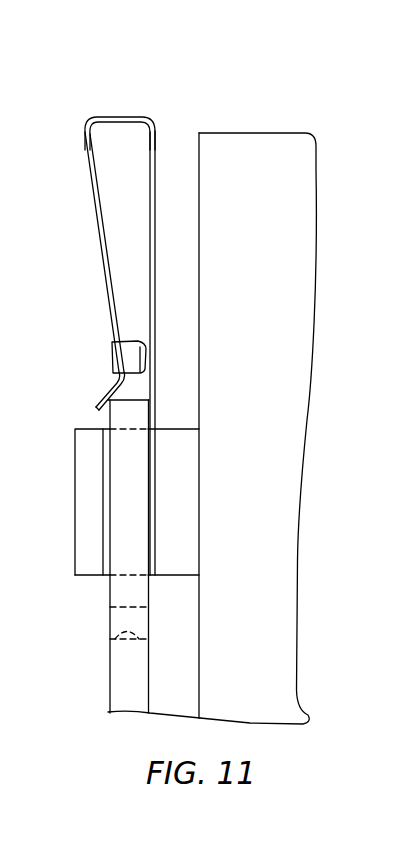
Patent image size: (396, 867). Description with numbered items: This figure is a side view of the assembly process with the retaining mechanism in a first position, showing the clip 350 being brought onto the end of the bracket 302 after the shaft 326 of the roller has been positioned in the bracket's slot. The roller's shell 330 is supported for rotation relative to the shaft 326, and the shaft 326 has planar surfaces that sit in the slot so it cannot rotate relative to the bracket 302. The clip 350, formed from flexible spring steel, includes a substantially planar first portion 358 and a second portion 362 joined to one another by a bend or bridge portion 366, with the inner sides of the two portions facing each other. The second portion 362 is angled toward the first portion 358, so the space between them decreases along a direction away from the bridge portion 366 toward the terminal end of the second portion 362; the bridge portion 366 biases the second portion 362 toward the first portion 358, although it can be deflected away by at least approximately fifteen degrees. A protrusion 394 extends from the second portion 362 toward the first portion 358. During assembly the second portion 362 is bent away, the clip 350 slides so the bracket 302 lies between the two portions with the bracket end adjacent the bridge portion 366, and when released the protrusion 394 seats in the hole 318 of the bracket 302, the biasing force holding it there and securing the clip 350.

The bracket 302 is at (130, 415).
The hole 318 is at (112, 630).
The shaft 326 is at (95, 518).
The shell 330 is at (258, 152).
The clip 350 is at (161, 104).
The first portion 358 is at (155, 210).
The second portion 362 is at (94, 208).
The bridge portion 366 is at (122, 117).
The protrusion 394 is at (128, 362).